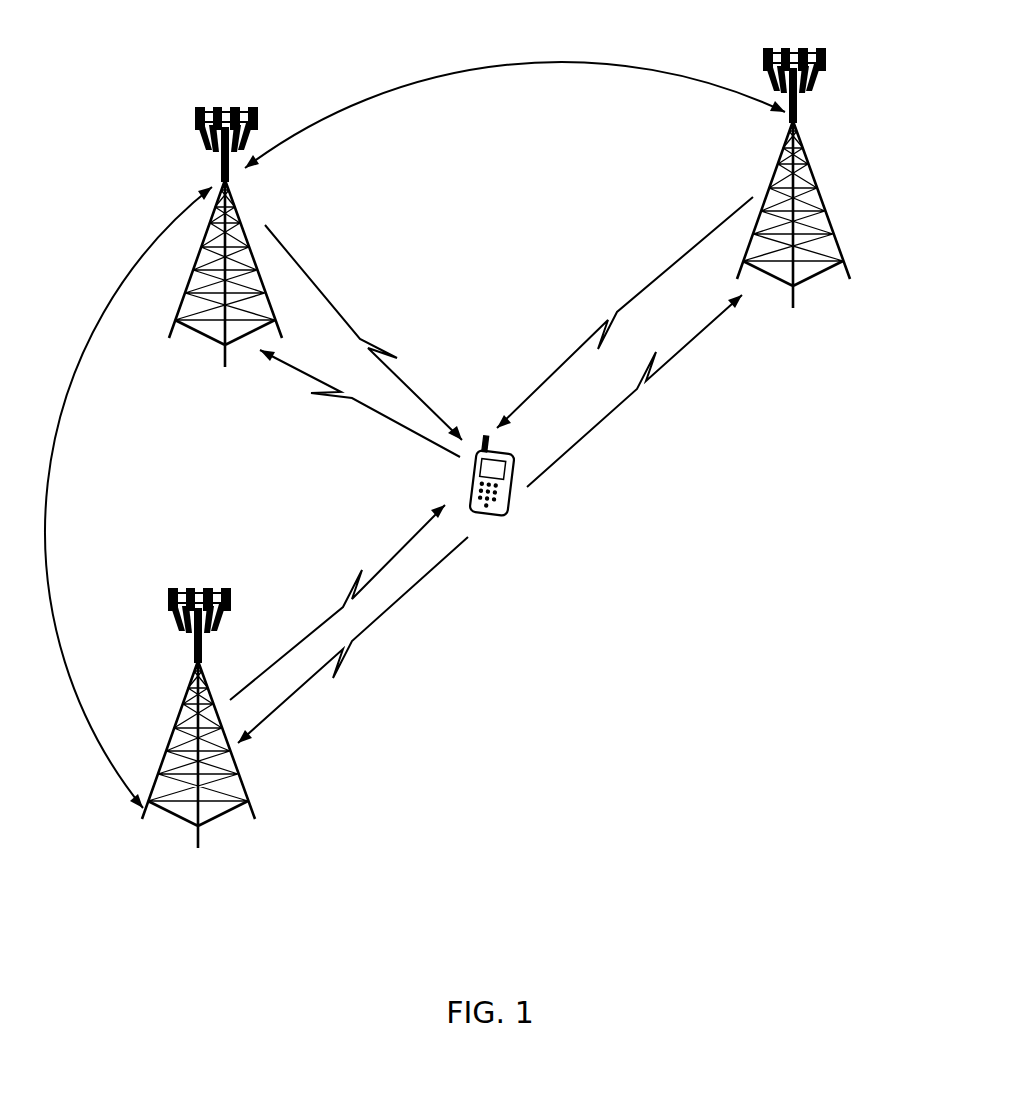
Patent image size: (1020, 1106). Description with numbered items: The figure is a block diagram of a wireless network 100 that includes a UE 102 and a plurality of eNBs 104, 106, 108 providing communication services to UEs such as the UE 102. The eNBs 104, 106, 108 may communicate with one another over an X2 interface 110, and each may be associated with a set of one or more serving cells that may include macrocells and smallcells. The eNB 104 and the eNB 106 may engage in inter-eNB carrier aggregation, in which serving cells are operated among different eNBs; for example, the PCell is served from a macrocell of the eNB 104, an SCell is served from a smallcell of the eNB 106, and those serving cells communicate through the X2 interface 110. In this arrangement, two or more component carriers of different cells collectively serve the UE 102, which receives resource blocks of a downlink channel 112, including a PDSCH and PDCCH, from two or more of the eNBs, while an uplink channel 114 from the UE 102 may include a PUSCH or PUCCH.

The wireless network 100 is at (497, 635).
The UE 102 is at (507, 517).
The eNB 104 is at (830, 63).
The eNB 106 is at (190, 134).
The eNB 108 is at (170, 583).
The X2 interface 110 is at (575, 62).
The downlink channel 112 is at (322, 278).
The uplink channel 114 is at (592, 428).